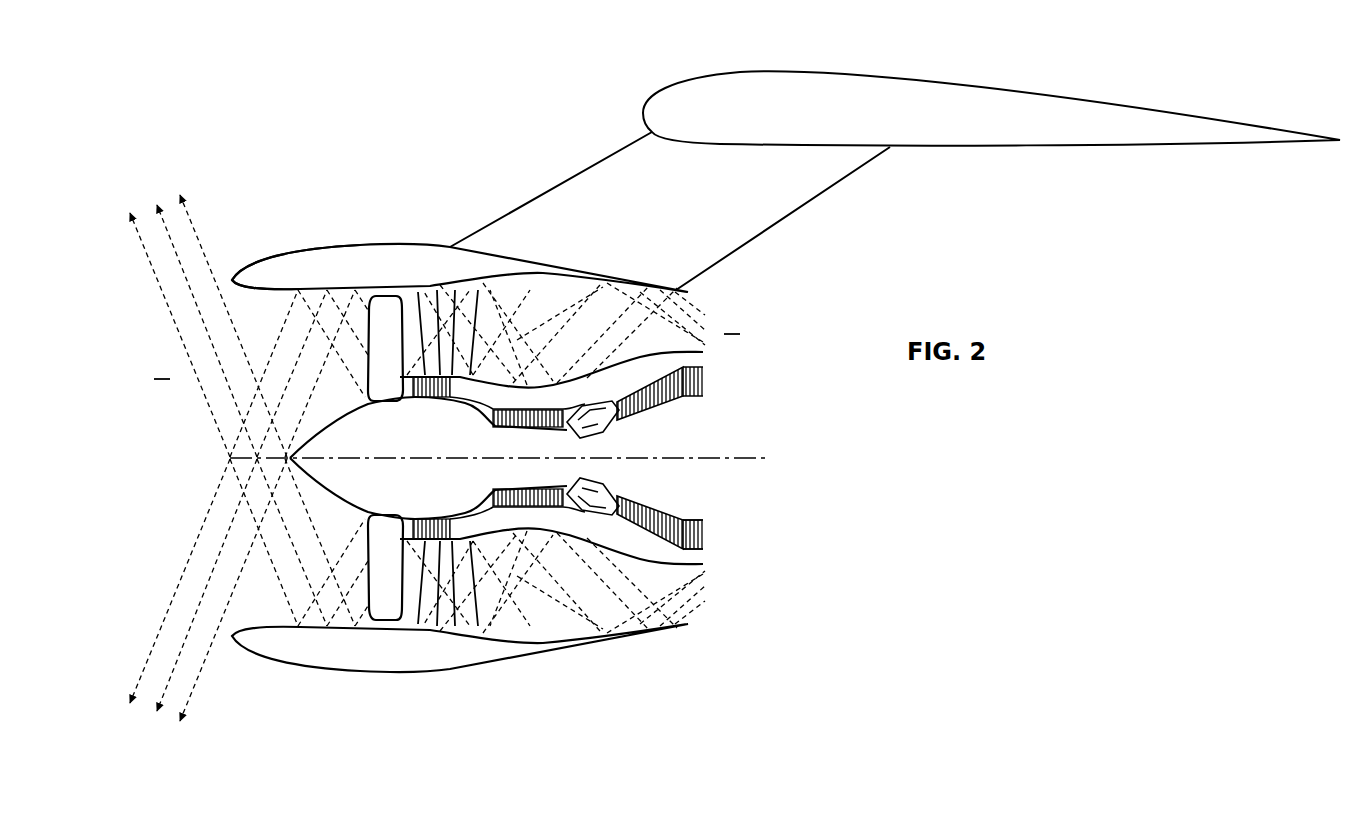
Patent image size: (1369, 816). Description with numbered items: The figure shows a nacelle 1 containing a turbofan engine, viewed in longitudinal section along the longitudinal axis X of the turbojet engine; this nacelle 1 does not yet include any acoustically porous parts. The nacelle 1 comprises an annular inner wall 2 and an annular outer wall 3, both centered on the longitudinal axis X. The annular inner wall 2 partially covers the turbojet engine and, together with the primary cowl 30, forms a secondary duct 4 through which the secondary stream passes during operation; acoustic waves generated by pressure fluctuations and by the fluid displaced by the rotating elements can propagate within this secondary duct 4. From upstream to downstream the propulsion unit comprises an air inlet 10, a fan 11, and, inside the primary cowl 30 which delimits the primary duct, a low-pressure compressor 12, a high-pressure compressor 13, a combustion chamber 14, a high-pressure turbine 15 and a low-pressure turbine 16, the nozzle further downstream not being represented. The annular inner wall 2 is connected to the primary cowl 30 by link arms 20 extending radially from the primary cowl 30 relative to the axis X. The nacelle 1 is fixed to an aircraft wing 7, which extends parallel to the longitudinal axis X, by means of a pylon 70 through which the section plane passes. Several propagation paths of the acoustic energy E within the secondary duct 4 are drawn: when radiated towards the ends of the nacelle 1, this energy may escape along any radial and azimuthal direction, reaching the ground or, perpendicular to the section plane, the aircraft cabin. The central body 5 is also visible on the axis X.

The nacelle 1 is at (393, 274).
The annular inner wall 2 is at (285, 299).
The annular outer wall 3 is at (281, 252).
The secondary duct 4 is at (544, 315).
The primary flow path 5 is at (544, 453).
The aircraft wing 7 is at (952, 125).
The air inlet 10 is at (272, 522).
The fan 11 is at (399, 364).
The low-pressure compressor 12 is at (430, 536).
The high-pressure compressor 13 is at (527, 504).
The combustion chamber 14 is at (593, 504).
The high-pressure turbine 15 is at (628, 506).
The low-pressure turbine 16 is at (675, 519).
The link arms 20 is at (477, 310).
The primary cowl 30 is at (549, 411).
The pylon 70 is at (685, 214).
The acoustic energy E is at (447, 345).
The longitudinal axis X is at (755, 456).